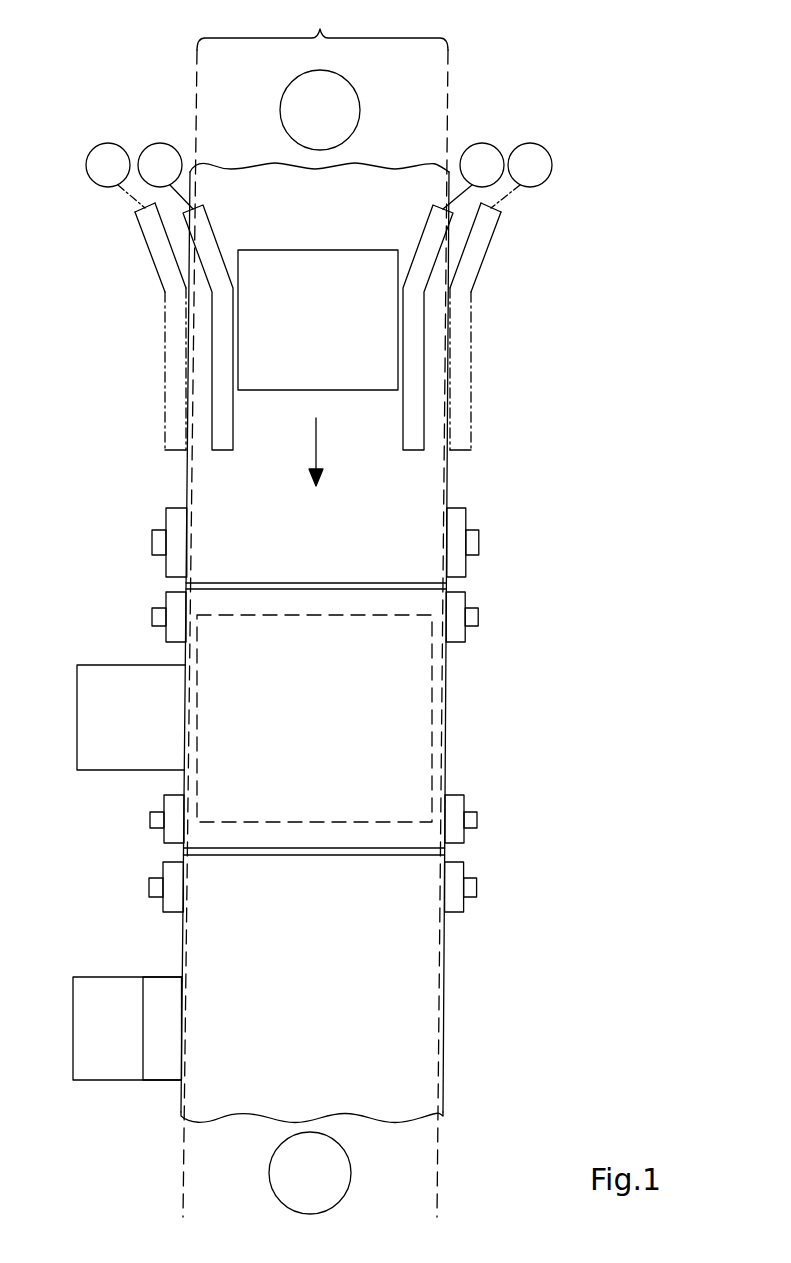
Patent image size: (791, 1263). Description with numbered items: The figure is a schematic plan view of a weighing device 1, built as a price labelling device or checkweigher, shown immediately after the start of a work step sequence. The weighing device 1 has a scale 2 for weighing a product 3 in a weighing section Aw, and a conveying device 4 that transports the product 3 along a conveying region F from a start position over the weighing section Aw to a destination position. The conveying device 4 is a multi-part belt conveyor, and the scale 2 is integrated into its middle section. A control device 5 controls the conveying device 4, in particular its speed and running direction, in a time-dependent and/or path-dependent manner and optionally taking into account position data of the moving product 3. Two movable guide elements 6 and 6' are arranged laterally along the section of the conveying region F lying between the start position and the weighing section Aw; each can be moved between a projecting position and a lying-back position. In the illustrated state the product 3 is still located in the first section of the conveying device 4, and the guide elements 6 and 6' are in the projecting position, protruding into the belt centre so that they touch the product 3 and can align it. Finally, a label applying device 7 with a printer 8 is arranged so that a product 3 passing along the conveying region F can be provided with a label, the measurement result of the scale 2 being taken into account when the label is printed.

The weighing device 1 is at (582, 72).
The scale 2 is at (420, 710).
The product 3 is at (326, 334).
The conveying device 4 is at (470, 1028).
The control device 5 is at (99, 650).
The guide element 6 is at (165, 317).
The guide element 6' is at (473, 317).
The label applying device 7 is at (95, 960).
The printer 8 is at (163, 1055).
The conveying region F is at (315, 608).
The weighing section Aw is at (432, 742).